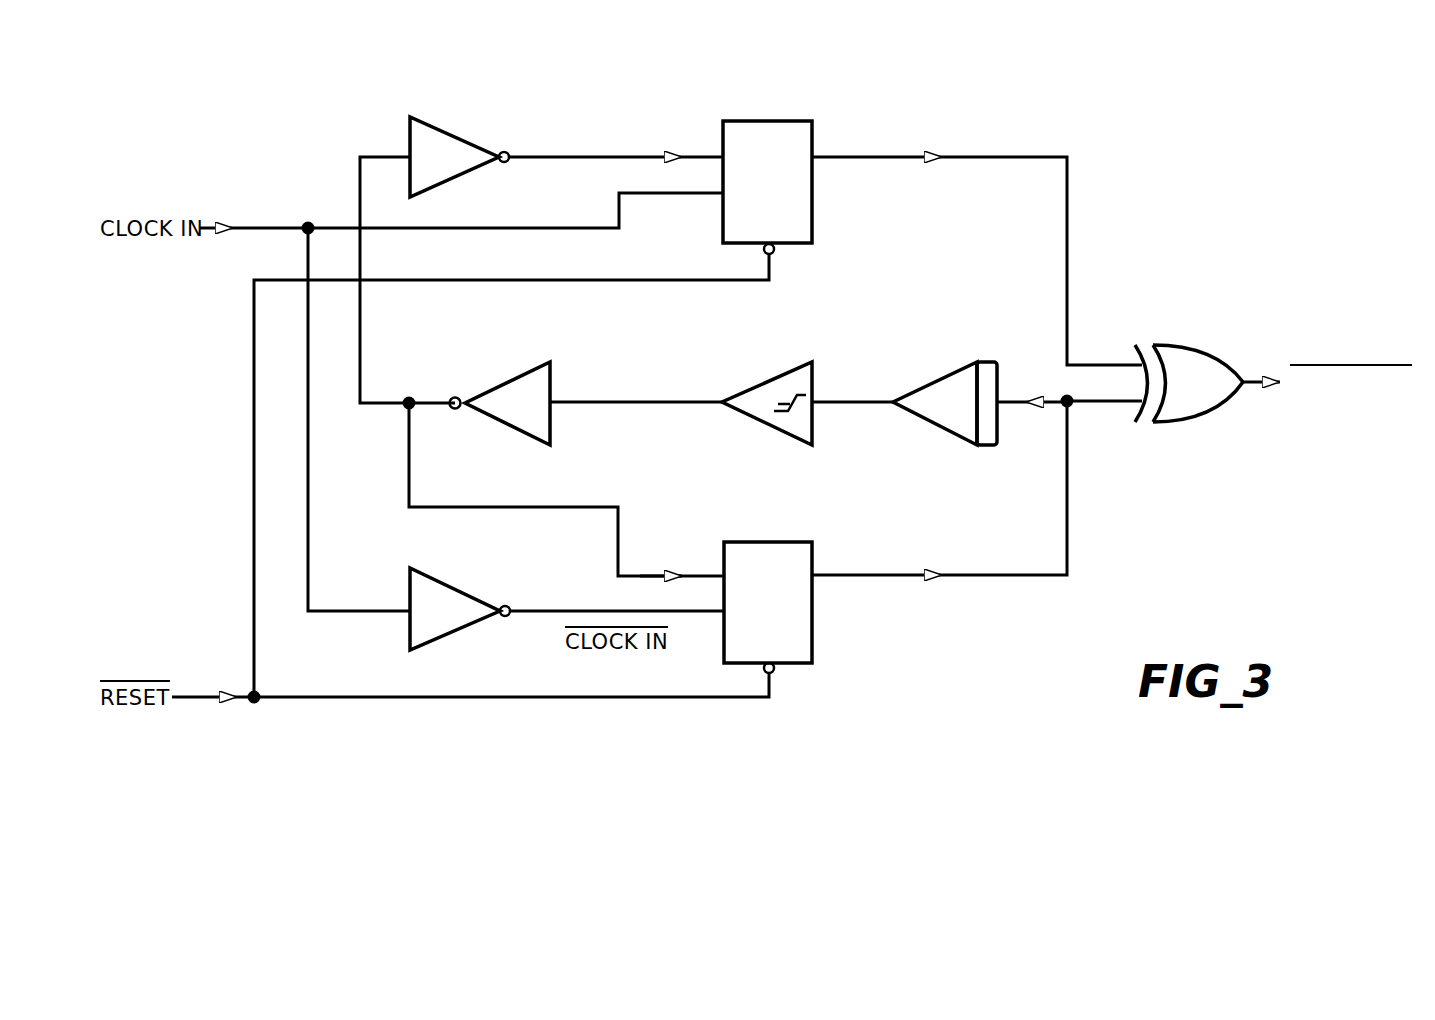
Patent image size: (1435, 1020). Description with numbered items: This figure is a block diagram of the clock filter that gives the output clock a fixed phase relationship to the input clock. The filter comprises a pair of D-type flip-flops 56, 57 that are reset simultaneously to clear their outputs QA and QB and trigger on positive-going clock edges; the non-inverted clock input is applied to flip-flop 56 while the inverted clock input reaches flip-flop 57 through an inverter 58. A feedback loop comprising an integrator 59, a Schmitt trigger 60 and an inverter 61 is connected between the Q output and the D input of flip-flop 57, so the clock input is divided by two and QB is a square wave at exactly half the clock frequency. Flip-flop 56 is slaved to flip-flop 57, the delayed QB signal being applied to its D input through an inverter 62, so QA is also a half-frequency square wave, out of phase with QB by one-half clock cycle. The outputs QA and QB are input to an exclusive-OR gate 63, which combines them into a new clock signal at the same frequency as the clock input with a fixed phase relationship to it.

The D-type flip-flop 56 is at (765, 121).
The D-type flip-flop 57 is at (762, 542).
The inverter 58 is at (460, 588).
The integrator 59 is at (948, 368).
The Schmitt trigger 60 is at (755, 422).
The inverter 61 is at (513, 372).
The inverter 62 is at (460, 130).
The exclusive-OR gate 63 is at (1220, 405).